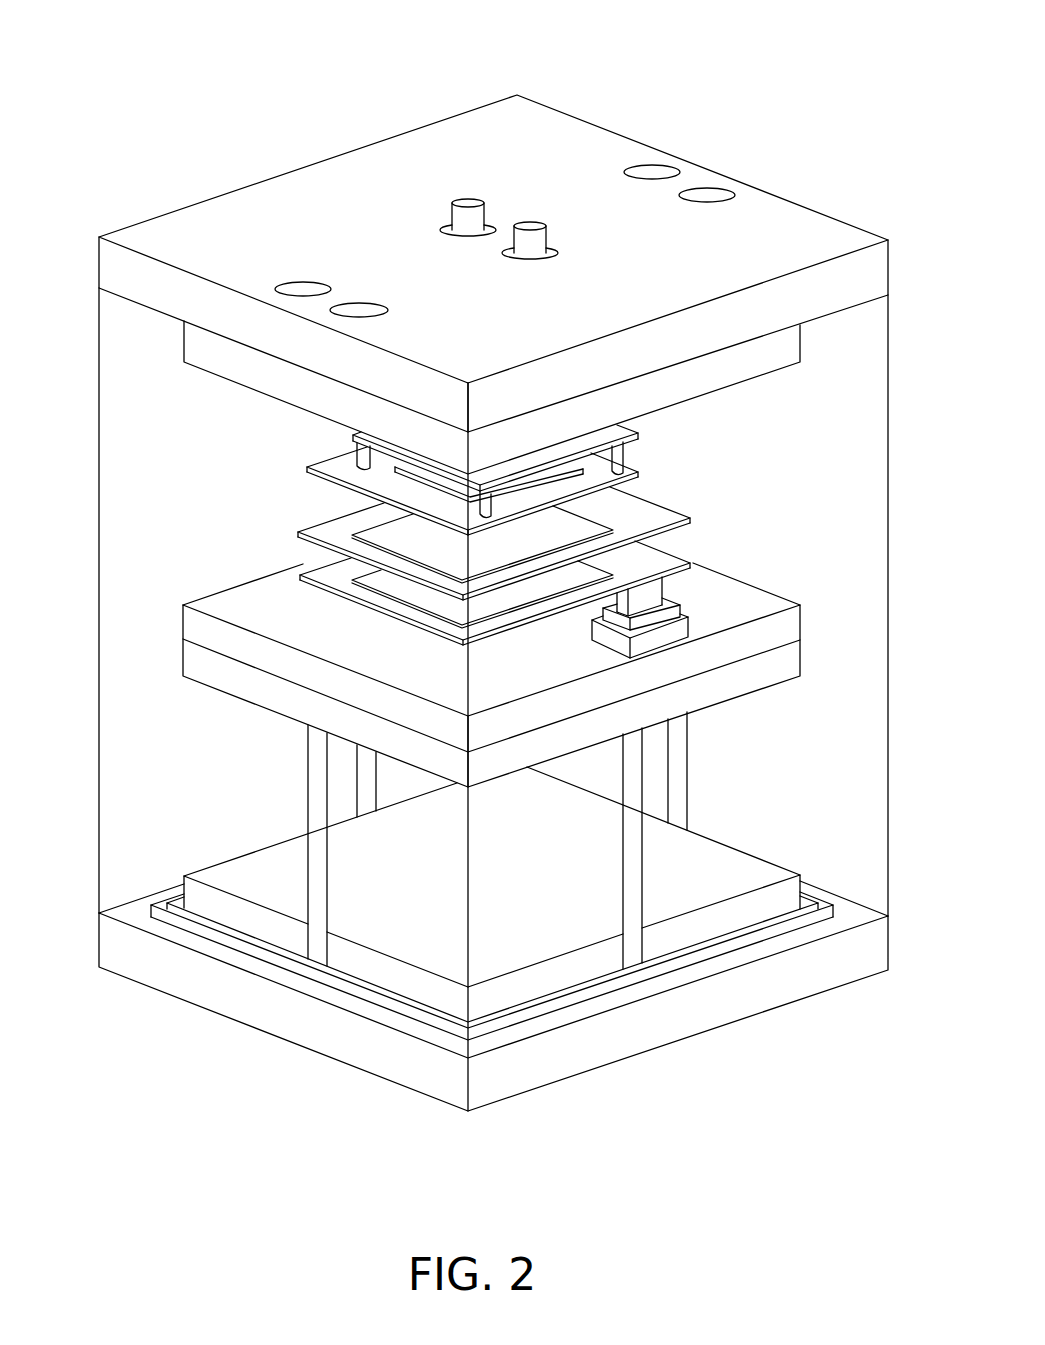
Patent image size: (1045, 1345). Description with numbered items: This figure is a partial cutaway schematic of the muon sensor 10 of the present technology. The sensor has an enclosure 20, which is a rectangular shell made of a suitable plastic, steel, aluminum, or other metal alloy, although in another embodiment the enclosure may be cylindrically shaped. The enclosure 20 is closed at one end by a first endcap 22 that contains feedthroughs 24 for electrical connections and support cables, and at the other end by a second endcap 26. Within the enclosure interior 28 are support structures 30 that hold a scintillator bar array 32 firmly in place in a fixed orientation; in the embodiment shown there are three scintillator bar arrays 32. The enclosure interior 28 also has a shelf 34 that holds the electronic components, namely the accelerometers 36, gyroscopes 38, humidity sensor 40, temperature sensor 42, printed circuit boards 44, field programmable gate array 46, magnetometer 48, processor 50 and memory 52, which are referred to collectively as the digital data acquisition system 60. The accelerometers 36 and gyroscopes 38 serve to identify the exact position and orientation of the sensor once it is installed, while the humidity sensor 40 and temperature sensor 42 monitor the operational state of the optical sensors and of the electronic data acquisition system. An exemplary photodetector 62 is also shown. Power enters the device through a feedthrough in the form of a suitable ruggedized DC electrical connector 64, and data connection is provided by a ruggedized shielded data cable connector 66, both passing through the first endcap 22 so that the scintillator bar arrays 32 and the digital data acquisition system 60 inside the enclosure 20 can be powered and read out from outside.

The muon sensor 10 is at (846, 57).
The enclosure 20 is at (98, 543).
The first endcap 22 is at (770, 222).
The feedthroughs 24 is at (360, 310).
The second endcap 26 is at (722, 1027).
The enclosure interior 28 is at (130, 766).
The support structures 30 is at (320, 866).
The scintillator bar array 32 is at (780, 347).
The shelf 34 is at (748, 600).
The accelerometers 36 is at (588, 448).
The gyroscopes 38 is at (490, 480).
The humidity sensor 40 is at (472, 491).
The temperature sensor 42 is at (580, 528).
The printed circuit boards 44 is at (494, 543).
The field programmable gate array 46 is at (482, 544).
The magnetometer 48 is at (562, 556).
The processor 50 is at (482, 593).
The memory 52 is at (482, 603).
The digital data acquisition system 60 is at (822, 398).
The photodetector 62 is at (640, 600).
The DC electrical connector 64 is at (530, 222).
The shielded data cable connector 66 is at (467, 200).